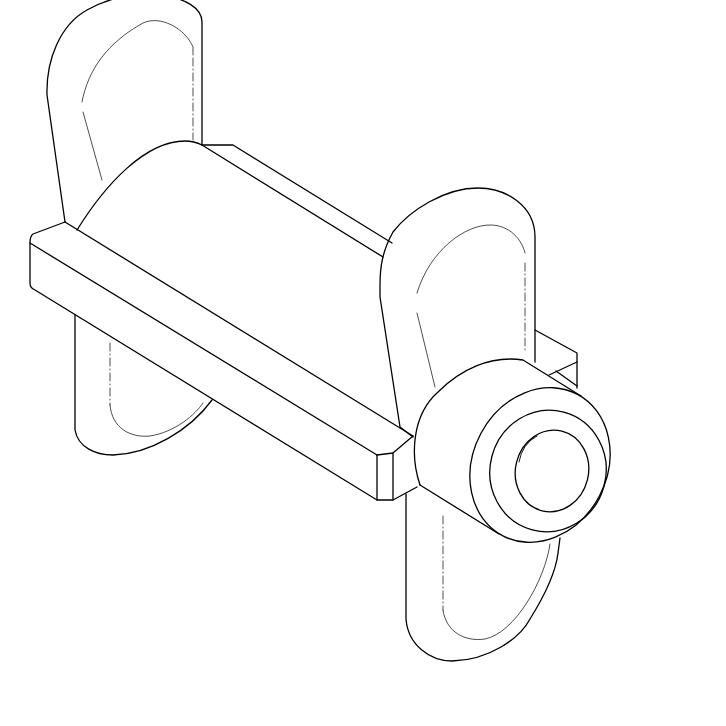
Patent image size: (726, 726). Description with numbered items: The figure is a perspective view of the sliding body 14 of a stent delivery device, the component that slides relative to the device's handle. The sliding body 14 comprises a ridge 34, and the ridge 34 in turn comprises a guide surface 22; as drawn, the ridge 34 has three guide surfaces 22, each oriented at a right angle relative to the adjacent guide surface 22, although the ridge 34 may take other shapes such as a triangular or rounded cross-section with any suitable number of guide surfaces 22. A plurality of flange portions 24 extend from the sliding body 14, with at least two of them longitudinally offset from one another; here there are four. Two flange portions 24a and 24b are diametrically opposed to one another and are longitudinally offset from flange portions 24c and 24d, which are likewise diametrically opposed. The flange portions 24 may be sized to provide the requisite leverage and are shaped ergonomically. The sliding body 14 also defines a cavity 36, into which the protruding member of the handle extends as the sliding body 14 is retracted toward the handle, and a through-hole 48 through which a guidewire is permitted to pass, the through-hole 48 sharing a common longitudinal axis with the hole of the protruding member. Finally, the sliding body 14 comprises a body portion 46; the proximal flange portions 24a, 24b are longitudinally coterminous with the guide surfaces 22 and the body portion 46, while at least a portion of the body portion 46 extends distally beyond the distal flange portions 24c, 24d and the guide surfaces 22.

The sliding body 14 is at (457, 123).
The guide surface 22 is at (272, 365).
The flange portions 24 is at (123, 353).
The flange portion 24a is at (203, 40).
The flange portion 24b is at (132, 448).
The flange portion 24c is at (538, 238).
The flange portion 24d is at (470, 653).
The ridge 34 is at (272, 423).
The cavity 36 is at (544, 484).
The body portion 46 is at (314, 179).
The through-hole 48 is at (569, 457).